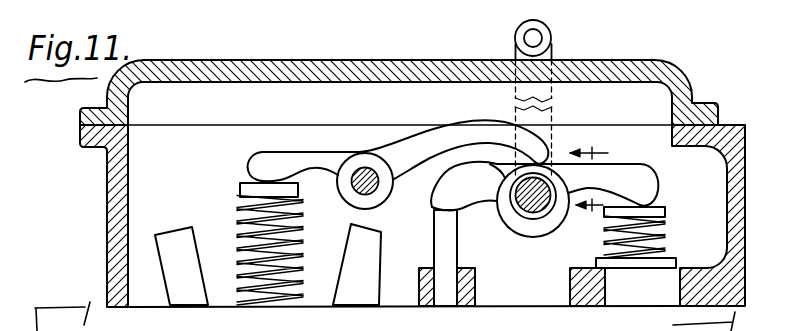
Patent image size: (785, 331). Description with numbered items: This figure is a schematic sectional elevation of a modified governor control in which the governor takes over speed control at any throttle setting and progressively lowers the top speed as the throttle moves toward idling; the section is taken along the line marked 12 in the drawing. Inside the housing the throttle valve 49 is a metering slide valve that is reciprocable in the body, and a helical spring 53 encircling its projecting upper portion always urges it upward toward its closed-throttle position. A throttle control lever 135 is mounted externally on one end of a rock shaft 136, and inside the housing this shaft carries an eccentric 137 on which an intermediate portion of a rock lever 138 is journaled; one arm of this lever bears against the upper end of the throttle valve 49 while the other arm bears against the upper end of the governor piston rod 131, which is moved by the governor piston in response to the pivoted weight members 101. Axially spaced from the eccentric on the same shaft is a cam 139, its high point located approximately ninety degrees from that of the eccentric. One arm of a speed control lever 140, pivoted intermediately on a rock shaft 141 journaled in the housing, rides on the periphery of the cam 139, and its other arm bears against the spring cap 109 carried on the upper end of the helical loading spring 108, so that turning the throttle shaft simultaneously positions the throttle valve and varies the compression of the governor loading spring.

The section line 12- 12 is at (590, 183).
The throttle valve 49 is at (662, 212).
The helical spring 53 is at (665, 228).
The weight members 101 is at (355, 251).
The helical loading spring 108 is at (297, 230).
The spring cap 109 is at (245, 192).
The piston rod 131 is at (448, 247).
The throttle control lever 135 is at (549, 54).
The rock shaft 136 is at (532, 200).
The eccentric 137 is at (541, 218).
The rock lever 138 is at (555, 220).
The cam 139 is at (548, 155).
The speed control lever 140 is at (426, 158).
The rock shaft 141 is at (360, 178).